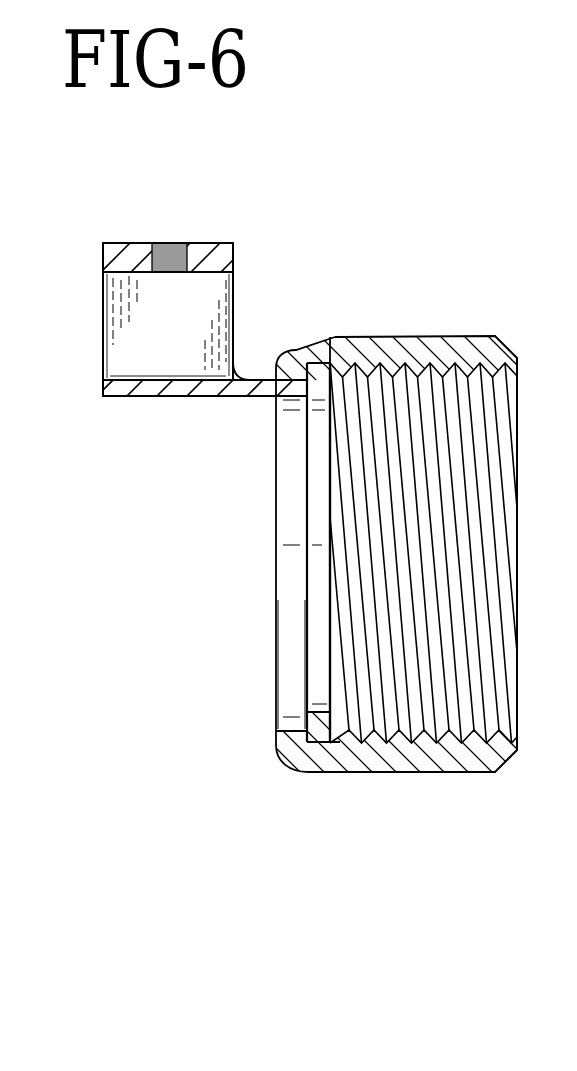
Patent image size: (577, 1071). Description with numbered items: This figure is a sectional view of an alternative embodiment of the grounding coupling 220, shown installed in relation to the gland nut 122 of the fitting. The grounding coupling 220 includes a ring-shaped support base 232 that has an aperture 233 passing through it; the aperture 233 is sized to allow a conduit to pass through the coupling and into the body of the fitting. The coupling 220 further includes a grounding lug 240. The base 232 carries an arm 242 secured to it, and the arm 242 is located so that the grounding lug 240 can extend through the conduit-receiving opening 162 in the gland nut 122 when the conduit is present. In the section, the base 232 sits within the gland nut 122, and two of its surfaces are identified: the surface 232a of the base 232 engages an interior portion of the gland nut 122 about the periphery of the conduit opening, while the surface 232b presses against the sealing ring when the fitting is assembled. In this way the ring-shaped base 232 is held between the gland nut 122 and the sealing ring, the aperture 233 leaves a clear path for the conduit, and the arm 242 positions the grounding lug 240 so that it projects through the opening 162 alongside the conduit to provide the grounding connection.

The gland nut 122 is at (475, 773).
The conduit-receiving opening 162 is at (286, 730).
The grounding coupling 220 is at (220, 436).
The ring-shaped support base 232 is at (328, 760).
The surface of base 232a is at (292, 738).
The surface of base 232b is at (319, 368).
The aperture 233 is at (325, 383).
The grounding lug 240 is at (270, 254).
The arm 242 is at (254, 378).